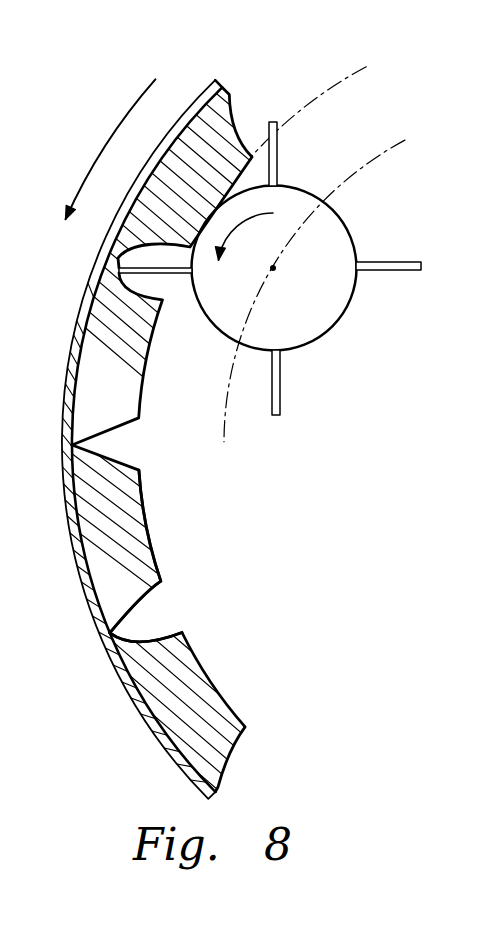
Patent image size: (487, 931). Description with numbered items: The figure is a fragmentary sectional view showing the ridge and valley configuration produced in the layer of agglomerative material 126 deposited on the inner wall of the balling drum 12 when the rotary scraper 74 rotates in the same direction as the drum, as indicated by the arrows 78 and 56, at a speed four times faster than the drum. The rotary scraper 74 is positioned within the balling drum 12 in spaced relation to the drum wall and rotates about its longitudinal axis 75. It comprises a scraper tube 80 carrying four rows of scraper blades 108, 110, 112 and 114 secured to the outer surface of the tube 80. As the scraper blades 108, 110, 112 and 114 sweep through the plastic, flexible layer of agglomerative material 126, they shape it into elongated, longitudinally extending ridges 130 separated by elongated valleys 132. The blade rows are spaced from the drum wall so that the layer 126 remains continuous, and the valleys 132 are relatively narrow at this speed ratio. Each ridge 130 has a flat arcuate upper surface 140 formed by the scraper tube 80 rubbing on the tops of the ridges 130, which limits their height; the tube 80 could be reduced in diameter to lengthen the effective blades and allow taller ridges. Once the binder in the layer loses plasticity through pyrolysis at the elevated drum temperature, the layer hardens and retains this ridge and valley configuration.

The balling drum 12 is at (196, 92).
The directional arrow 78 is at (120, 131).
The scraper blade 108 is at (278, 146).
The rotary scraper 74 is at (286, 268).
The arrow 56 is at (236, 231).
The longitudinal axis 75 is at (276, 270).
The scraper tube 80 is at (334, 327).
The scraper blade 114 is at (405, 262).
The scraper blade 112 is at (281, 393).
The scraper blade 110 is at (183, 257).
The flat arcuate upper surface 140 is at (143, 509).
The ridges 130 is at (144, 544).
The valleys 132 is at (118, 624).
The layer of agglomerative material 126 is at (142, 683).